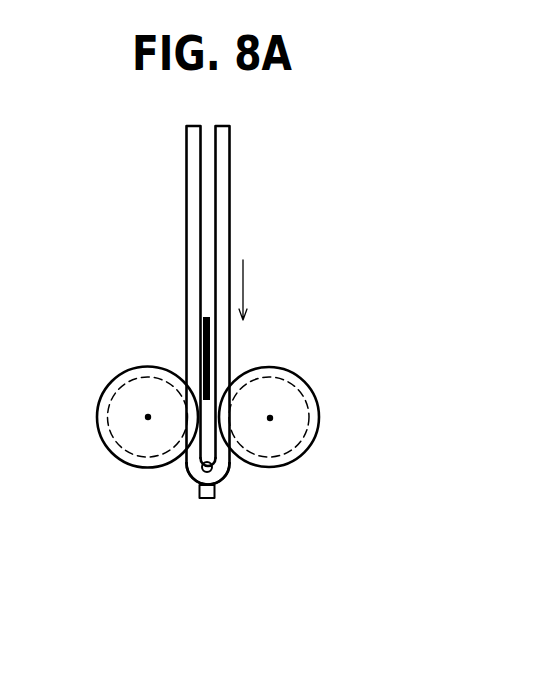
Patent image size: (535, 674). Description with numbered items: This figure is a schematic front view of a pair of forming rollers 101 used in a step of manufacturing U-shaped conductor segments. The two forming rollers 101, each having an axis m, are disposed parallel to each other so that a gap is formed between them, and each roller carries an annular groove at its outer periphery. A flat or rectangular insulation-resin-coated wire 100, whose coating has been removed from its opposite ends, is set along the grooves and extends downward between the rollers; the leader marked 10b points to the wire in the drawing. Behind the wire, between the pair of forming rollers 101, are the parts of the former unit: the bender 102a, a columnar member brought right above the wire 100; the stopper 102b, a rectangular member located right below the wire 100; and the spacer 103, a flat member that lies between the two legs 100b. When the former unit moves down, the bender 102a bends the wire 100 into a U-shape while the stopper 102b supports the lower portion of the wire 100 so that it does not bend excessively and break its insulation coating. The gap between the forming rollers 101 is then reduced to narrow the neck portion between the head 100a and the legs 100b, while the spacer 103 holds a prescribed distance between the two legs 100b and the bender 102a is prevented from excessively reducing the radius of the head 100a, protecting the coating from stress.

The insulation-resin-coated wire 100 is at (229, 210).
The head 100a is at (232, 467).
The legs 100b is at (194, 192).
The wire 10b is at (223, 182).
The forming rollers 101 is at (130, 465).
The bender 102a is at (202, 473).
The stopper 102b is at (214, 498).
The spacer 103 is at (212, 339).
The axis m is at (148, 417).